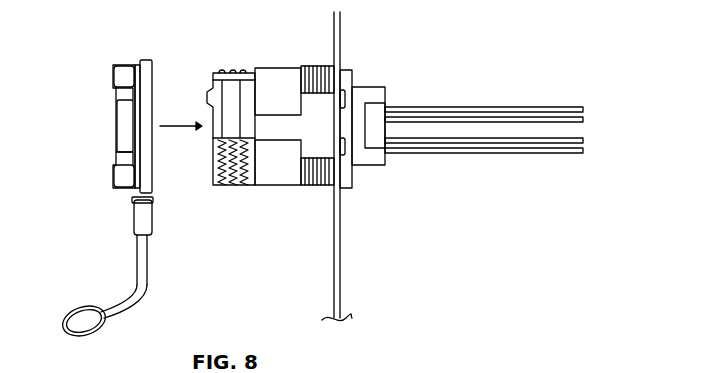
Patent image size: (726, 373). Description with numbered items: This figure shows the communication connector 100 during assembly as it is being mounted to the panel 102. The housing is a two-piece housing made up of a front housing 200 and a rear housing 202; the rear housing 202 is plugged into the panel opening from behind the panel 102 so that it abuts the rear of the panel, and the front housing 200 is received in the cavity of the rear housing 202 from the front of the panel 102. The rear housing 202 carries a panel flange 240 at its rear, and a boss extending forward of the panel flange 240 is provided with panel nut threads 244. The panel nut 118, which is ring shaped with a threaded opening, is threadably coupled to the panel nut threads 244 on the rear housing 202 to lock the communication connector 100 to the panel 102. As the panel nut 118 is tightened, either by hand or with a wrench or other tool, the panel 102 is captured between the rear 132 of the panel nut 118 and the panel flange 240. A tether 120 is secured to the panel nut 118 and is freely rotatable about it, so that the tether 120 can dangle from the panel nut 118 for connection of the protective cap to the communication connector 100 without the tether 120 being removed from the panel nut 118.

The communication connector 100 is at (428, 44).
The panel 102 is at (331, 24).
The panel nut 118 is at (120, 177).
The tether 120 is at (88, 309).
The rear 132 is at (150, 74).
The front housing 200 is at (219, 184).
The rear housing 202 is at (282, 181).
The panel flange 240 is at (346, 72).
The panel nut threads 244 is at (310, 66).